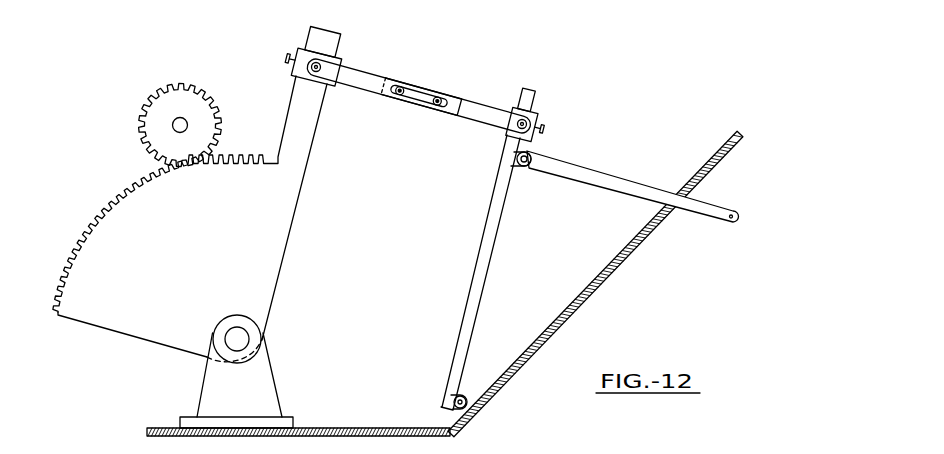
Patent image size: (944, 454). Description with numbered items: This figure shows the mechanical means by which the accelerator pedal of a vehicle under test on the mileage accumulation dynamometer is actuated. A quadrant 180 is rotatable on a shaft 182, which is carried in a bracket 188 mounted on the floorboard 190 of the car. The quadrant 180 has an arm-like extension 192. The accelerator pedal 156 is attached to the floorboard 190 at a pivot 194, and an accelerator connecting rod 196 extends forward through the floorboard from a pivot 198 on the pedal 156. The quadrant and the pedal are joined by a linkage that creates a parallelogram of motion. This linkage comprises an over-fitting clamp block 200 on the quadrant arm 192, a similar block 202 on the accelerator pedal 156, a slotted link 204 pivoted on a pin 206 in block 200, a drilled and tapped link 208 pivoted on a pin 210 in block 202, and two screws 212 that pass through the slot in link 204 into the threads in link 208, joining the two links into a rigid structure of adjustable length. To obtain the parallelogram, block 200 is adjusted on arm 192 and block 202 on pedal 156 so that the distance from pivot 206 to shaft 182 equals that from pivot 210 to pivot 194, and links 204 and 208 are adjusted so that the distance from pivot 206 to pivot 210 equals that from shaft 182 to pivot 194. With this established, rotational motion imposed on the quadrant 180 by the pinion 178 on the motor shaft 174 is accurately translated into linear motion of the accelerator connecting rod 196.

The accelerator pedal 156 is at (533, 95).
The motor shaft 174 is at (176, 125).
The pinion 178 is at (162, 99).
The quadrant 180 is at (152, 203).
The shaft 182 is at (240, 339).
The bracket 188 is at (252, 385).
The floorboard 190 is at (368, 428).
The arm-like extension 192 is at (330, 39).
The pivot 194 is at (455, 400).
The accelerator connecting rod 196 is at (621, 179).
The pivot 198 is at (532, 152).
The clamp block 200 is at (336, 62).
The block 202 is at (538, 114).
The slotted link 204 is at (360, 79).
The pin 206 is at (310, 67).
The drilled and tapped link 208 is at (481, 112).
The pin 210 is at (512, 130).
The screws 212 is at (437, 97).